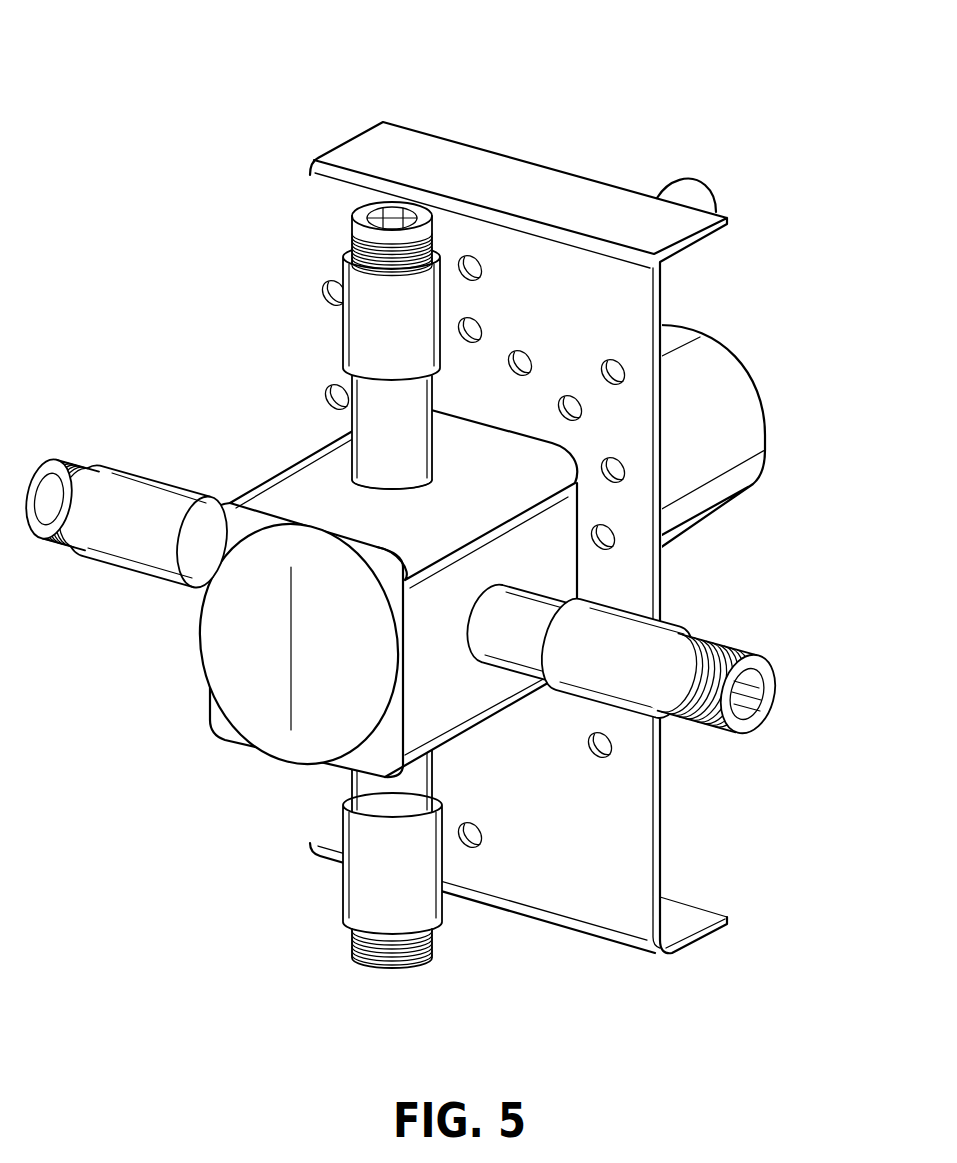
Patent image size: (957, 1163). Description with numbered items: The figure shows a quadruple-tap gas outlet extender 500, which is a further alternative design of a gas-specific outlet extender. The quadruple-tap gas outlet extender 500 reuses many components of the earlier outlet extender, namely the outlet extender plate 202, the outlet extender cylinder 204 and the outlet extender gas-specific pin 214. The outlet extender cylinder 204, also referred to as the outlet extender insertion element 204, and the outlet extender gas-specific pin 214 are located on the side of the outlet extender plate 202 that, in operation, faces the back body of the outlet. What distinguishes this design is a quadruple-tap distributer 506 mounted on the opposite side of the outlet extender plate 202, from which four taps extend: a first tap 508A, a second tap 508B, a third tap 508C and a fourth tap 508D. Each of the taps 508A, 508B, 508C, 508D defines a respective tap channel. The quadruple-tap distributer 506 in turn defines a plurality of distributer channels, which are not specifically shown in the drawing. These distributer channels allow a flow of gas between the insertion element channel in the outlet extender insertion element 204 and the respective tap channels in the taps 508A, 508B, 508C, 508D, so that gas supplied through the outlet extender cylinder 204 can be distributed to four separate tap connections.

The quadruple-tap gas outlet extender 500 is at (180, 61).
The outlet extender plate 202 is at (327, 247).
The outlet extender gas-specific pin 214 is at (702, 192).
The outlet extender cylinder 204 is at (715, 363).
The quadruple-tap distributer 506 is at (241, 653).
The first tap 508A is at (680, 628).
The second tap 508B is at (353, 903).
The third tap 508C is at (123, 468).
The fourth tap 508D is at (370, 322).